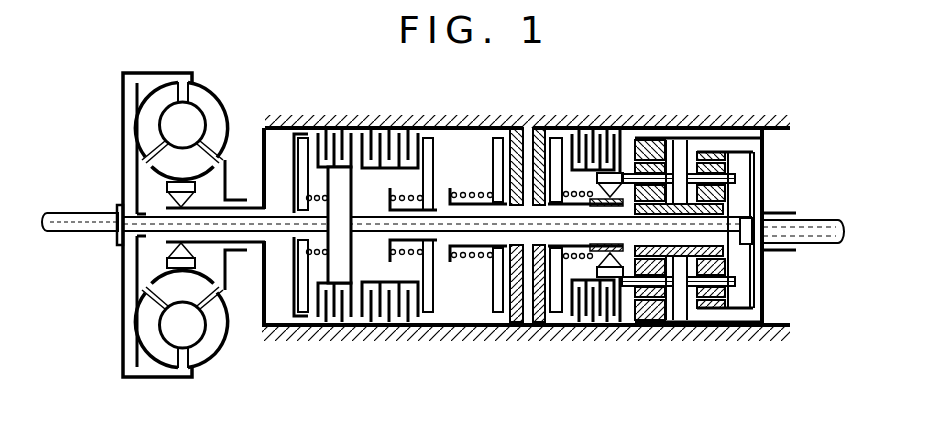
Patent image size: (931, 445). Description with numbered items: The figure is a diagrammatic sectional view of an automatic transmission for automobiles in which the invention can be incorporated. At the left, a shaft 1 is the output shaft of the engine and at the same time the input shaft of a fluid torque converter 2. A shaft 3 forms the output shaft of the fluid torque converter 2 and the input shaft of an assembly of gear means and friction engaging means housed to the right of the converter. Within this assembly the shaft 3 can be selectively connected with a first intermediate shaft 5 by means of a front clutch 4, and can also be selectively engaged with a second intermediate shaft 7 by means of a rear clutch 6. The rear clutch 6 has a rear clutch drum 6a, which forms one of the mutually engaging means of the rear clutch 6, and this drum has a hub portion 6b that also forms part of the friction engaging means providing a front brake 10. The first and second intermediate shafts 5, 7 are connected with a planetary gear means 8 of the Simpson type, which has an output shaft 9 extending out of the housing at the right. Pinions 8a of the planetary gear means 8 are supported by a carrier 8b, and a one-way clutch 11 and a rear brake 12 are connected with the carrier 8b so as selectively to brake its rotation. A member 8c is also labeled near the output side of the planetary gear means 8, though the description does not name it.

The shaft 1 is at (79, 214).
The fluid torque converter 2 is at (167, 73).
The shaft 3 is at (277, 217).
The front clutch 4 is at (335, 130).
The first intermediate shaft 5 is at (382, 221).
The rear clutch 6 is at (390, 130).
The rear clutch drum 6a is at (422, 130).
The hub portion 6b is at (467, 189).
The second intermediate shaft 7 is at (446, 247).
The planetary gear means 8 is at (699, 130).
The pinions 8a is at (668, 297).
The carrier 8b is at (621, 299).
The output carrier 8c is at (755, 241).
The output shaft 9 is at (808, 220).
The front brake 10 is at (486, 130).
The one-way clutch 11 is at (625, 130).
The rear brake 12 is at (579, 130).